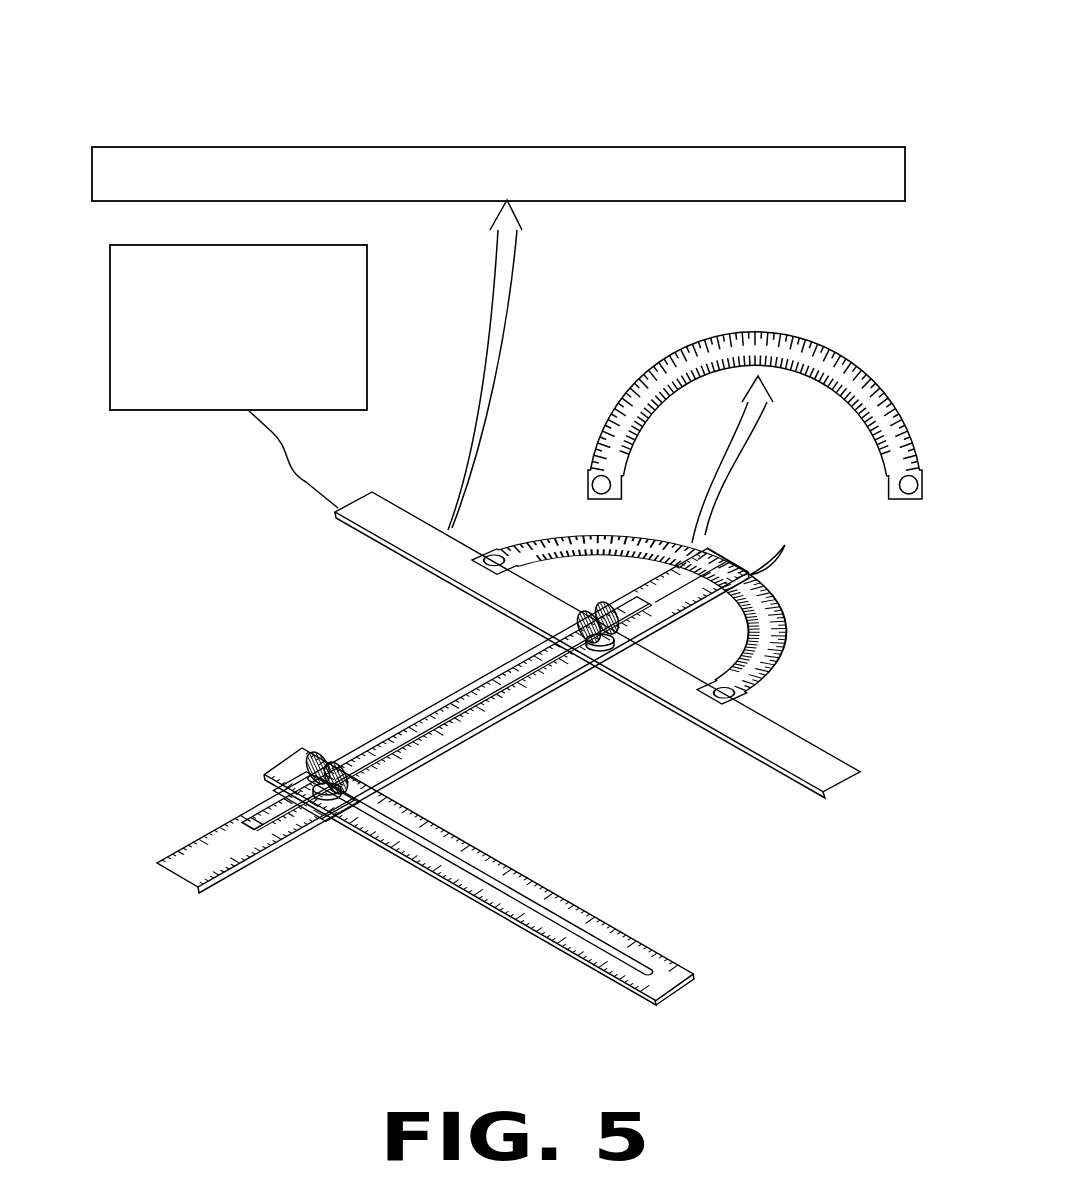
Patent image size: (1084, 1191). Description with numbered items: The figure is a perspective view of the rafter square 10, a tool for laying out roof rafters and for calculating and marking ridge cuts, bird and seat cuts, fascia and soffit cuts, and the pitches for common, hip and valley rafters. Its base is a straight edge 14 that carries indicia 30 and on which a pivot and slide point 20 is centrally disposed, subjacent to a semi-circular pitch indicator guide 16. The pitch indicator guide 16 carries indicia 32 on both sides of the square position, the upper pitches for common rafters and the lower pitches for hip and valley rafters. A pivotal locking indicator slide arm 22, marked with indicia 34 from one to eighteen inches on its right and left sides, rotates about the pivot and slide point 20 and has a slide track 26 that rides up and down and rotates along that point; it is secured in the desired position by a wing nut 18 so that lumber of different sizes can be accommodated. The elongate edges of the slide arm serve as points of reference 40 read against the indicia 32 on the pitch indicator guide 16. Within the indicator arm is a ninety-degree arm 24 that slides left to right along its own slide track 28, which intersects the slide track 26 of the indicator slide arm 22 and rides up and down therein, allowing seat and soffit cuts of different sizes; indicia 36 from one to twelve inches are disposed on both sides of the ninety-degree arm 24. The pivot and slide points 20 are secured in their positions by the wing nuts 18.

The rafter square 10 is at (799, 110).
The straight edge 14 is at (402, 515).
The pitch indicator guide 16 is at (771, 335).
The wing nut 18 is at (316, 762).
The pivot and slide point 20 is at (586, 641).
The indicator slide arm 22 is at (438, 755).
The 90-degree arm 24 is at (482, 884).
The slide track 26 is at (403, 732).
The slide track 28 is at (280, 808).
The indicia of straight edge 30 is at (498, 338).
The indicia of pitch indicator guide 32 is at (628, 390).
The indicia of indicator slide arm 34 is at (200, 892).
The indicia of 90-degree arm 36 is at (650, 935).
The point of reference 40 is at (764, 545).